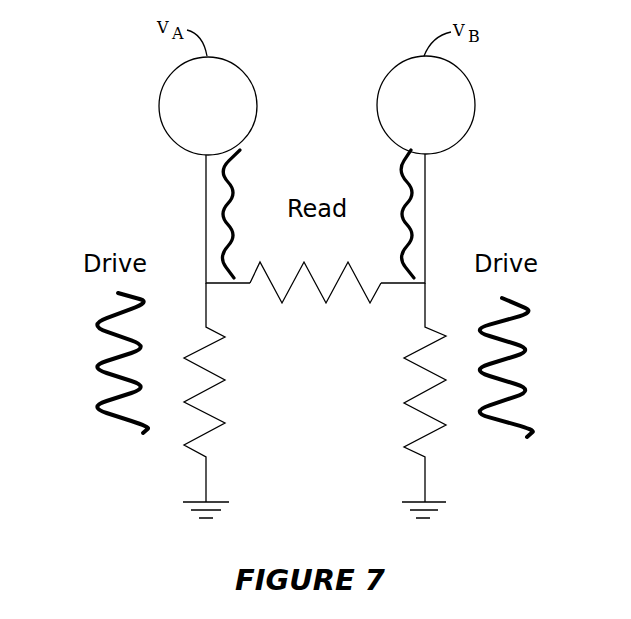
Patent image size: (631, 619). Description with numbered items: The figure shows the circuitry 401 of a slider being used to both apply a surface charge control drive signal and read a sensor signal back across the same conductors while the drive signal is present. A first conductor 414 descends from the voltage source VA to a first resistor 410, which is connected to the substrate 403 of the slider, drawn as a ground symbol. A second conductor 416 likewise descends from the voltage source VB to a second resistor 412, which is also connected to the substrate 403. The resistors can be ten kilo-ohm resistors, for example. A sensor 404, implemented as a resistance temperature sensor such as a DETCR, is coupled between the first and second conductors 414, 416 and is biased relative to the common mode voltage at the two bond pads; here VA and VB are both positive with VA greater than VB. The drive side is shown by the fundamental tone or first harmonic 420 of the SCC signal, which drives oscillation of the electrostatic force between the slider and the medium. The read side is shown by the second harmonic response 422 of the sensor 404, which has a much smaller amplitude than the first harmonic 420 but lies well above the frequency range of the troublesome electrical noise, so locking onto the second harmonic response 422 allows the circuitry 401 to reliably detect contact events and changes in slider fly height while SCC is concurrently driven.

The circuitry 401 is at (173, 466).
The substrate 403 is at (186, 519).
The sensor 404 is at (322, 296).
The first resistor 410 is at (203, 345).
The second resistor 412 is at (428, 327).
The first conductor 414 is at (205, 193).
The second conductor 416 is at (426, 188).
The first harmonic 420 is at (88, 408).
The second harmonic response 422 is at (222, 168).